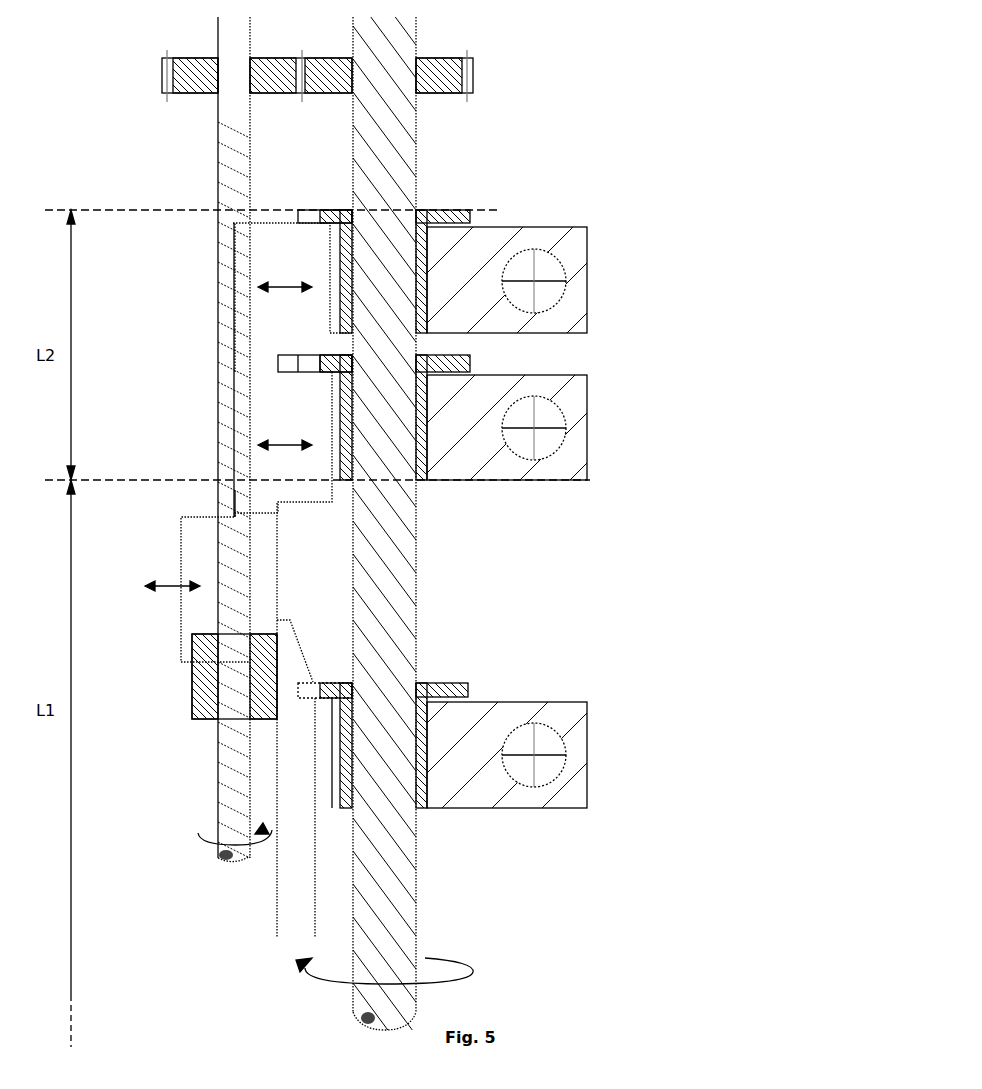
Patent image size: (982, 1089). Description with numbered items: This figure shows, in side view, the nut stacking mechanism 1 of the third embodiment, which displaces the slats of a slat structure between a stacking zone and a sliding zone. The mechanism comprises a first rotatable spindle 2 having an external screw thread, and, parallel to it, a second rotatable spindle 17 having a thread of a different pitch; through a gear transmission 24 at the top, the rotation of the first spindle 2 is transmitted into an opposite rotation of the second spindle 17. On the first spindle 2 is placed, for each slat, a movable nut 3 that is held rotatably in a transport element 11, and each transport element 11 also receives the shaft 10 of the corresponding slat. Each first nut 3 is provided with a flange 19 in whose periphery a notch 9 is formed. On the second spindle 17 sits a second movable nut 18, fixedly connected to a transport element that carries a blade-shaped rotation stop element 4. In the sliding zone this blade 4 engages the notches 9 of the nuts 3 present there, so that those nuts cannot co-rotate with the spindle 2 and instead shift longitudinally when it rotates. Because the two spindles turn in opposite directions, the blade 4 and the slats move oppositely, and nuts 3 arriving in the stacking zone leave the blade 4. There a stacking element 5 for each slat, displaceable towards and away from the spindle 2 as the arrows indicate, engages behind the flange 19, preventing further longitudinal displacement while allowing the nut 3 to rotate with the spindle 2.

The nut stacking mechanism 1 is at (584, 118).
The rotatable spindle 2 is at (408, 160).
The movable nut 3 is at (417, 209).
The blade-shaped rotation stop element 4 is at (290, 737).
The stacking element 5 is at (260, 263).
The notch 9 is at (302, 212).
The shaft 10 is at (545, 272).
The transport element 11 is at (575, 315).
The second rotatable spindle 17 is at (227, 177).
The second movable nut 18 is at (200, 682).
The flange 19 is at (460, 212).
The gear transmission 24 is at (438, 65).